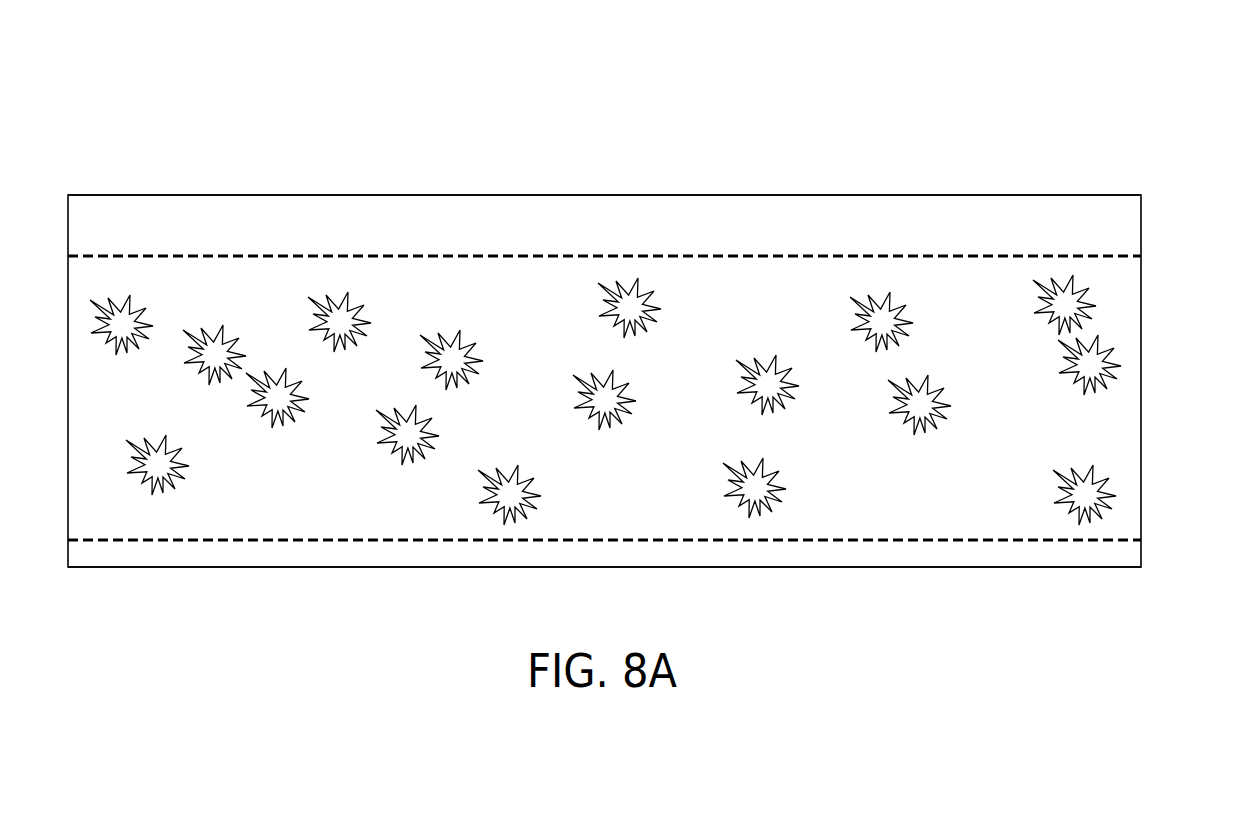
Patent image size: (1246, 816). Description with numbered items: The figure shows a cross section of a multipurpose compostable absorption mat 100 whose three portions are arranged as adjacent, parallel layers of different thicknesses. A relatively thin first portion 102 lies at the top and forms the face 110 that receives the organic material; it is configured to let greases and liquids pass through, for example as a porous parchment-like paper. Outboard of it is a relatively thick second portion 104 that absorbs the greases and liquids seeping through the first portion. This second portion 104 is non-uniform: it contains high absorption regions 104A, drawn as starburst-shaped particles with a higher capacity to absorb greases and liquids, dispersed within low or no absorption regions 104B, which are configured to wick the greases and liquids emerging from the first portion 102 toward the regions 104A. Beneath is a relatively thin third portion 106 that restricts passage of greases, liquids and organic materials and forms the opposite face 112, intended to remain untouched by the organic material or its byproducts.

The multipurpose compostable absorption mat 100 is at (930, 112).
The first portion 102 is at (1155, 195).
The second portion 104 is at (1155, 256).
The high absorption regions 104A is at (225, 298).
The low absorption regions 104B is at (319, 484).
The third portion 106 is at (1155, 540).
The face 110 is at (665, 182).
The face 112 is at (778, 585).